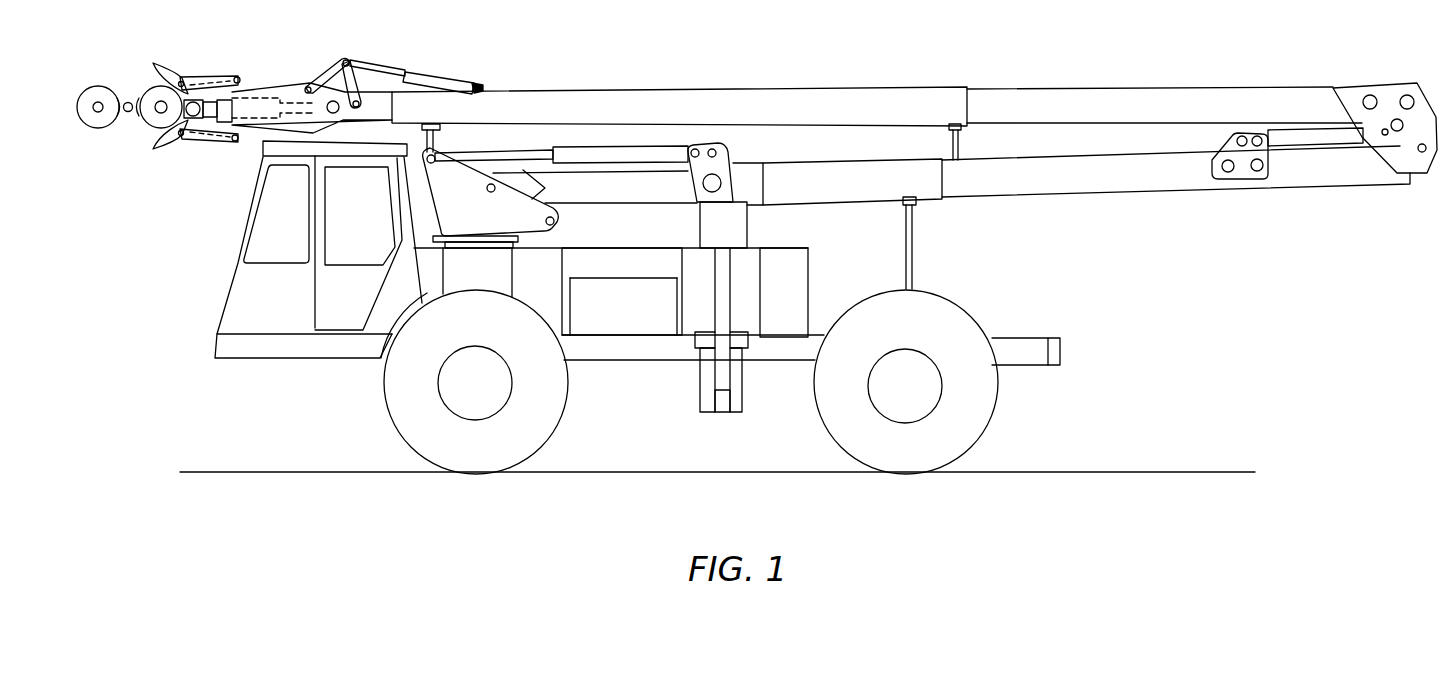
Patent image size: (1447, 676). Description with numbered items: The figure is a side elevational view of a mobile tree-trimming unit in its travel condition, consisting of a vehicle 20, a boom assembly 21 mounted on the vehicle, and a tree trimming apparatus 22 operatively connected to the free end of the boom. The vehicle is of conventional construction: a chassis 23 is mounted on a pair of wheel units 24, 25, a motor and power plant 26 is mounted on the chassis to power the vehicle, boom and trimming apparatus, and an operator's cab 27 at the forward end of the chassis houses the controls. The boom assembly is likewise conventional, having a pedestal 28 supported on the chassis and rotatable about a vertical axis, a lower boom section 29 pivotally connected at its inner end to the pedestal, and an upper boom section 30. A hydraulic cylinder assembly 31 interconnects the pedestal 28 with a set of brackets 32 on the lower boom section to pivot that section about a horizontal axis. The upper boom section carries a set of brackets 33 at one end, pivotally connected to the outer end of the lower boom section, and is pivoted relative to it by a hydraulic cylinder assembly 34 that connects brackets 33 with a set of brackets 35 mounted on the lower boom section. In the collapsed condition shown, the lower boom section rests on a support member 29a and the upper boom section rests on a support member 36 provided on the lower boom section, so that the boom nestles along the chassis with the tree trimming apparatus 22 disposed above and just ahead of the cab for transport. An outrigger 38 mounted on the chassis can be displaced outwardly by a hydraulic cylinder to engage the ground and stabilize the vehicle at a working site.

The vehicle 20 is at (232, 238).
The boom assembly 21 is at (865, 60).
The tree trimming apparatus 22 is at (291, 78).
The chassis 23 is at (1035, 338).
The wheel unit 24 is at (393, 424).
The wheel unit 25 is at (818, 425).
The motor and power plant 26 is at (810, 288).
The operator's cab 27 is at (228, 285).
The pedestal 28 is at (556, 222).
The lower boom section 29 is at (1045, 197).
The support member 29a is at (913, 263).
The upper boom section 30 is at (697, 57).
The hydraulic cylinder assembly 31 is at (594, 153).
The brackets 32 is at (720, 155).
The brackets 33 is at (1383, 105).
The hydraulic cylinder assembly 34 is at (1327, 143).
The brackets 35 is at (1240, 176).
The support member 36 is at (960, 137).
The outrigger 38 is at (700, 398).